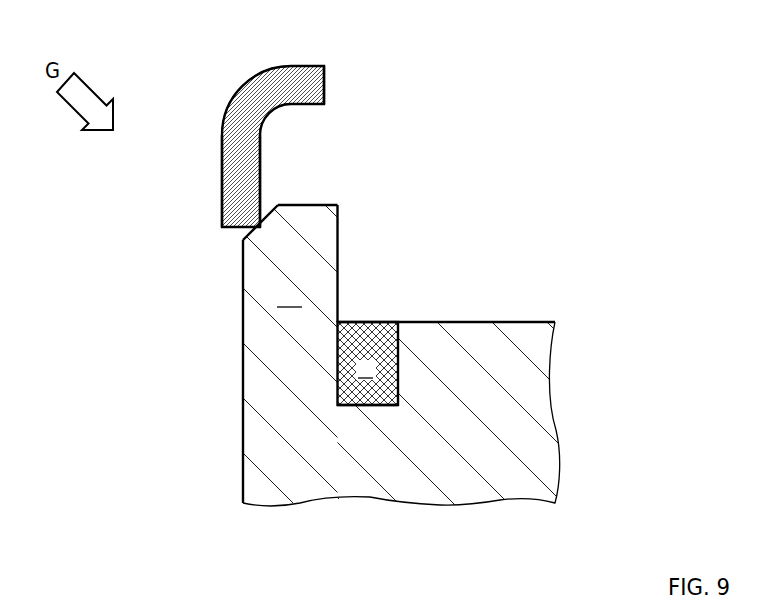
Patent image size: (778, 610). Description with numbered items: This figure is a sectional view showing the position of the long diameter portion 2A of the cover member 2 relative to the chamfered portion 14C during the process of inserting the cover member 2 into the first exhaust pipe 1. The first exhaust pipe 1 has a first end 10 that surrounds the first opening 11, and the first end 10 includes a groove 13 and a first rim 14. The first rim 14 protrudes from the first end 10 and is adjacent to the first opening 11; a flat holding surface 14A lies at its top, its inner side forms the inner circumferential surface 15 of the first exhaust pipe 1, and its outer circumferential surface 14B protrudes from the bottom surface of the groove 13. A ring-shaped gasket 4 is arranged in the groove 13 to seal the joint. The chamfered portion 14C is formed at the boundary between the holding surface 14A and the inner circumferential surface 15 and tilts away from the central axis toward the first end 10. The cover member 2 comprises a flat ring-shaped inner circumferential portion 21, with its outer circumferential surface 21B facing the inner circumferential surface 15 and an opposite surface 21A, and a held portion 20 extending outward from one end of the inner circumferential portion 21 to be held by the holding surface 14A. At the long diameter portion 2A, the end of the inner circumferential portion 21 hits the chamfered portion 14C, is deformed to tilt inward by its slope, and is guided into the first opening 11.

The first exhaust pipe 1 is at (389, 297).
The cover member 2 is at (281, 123).
The long diameter portion 2A is at (369, 80).
The gasket 4 is at (368, 434).
The first end 10 is at (477, 322).
The first opening 11 is at (389, 297).
The groove 13 is at (378, 405).
The first rim 14 is at (357, 297).
The holding surface 14A is at (312, 205).
The outer circumferential surface 14B is at (338, 236).
The chamfered portion 14C is at (250, 233).
The inner circumferential surface 15 is at (243, 394).
The held portion 20 is at (301, 75).
The inner circumferential portion 21 is at (231, 150).
The outer surface of straight portion 21A is at (221, 181).
The outer circumferential surface 21B is at (261, 156).